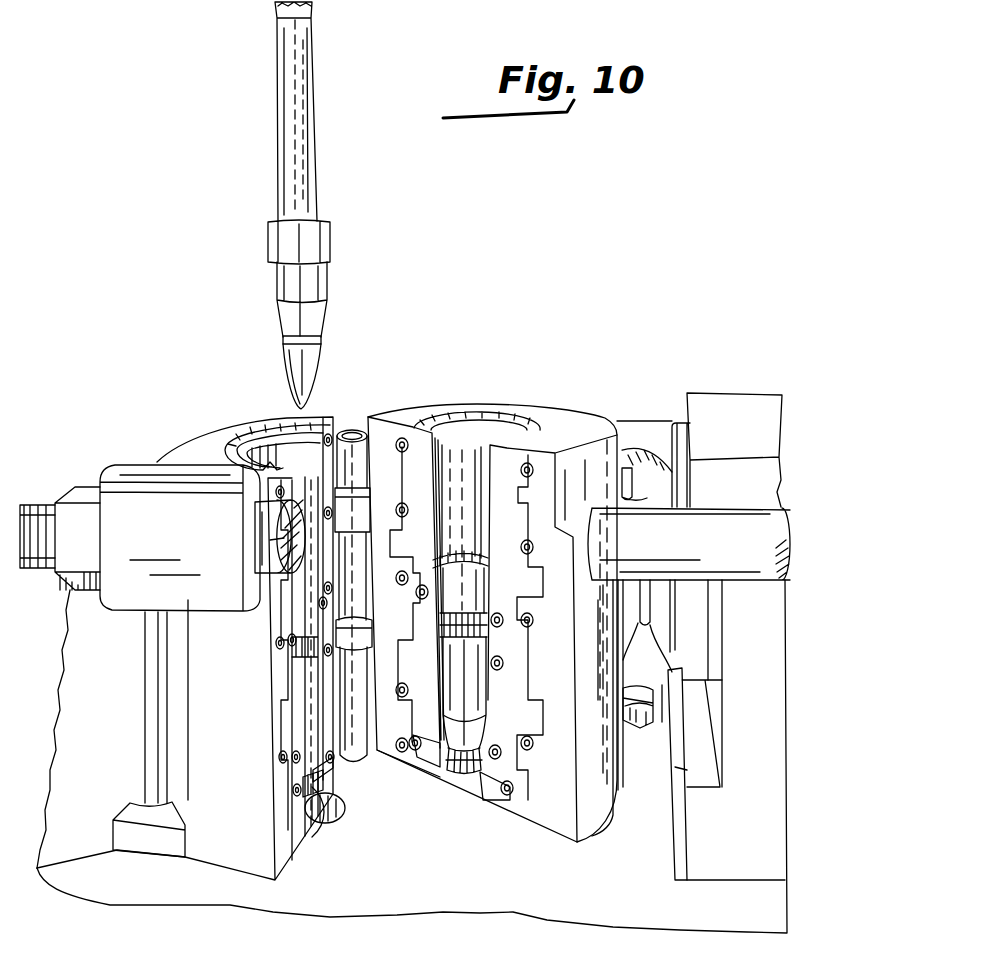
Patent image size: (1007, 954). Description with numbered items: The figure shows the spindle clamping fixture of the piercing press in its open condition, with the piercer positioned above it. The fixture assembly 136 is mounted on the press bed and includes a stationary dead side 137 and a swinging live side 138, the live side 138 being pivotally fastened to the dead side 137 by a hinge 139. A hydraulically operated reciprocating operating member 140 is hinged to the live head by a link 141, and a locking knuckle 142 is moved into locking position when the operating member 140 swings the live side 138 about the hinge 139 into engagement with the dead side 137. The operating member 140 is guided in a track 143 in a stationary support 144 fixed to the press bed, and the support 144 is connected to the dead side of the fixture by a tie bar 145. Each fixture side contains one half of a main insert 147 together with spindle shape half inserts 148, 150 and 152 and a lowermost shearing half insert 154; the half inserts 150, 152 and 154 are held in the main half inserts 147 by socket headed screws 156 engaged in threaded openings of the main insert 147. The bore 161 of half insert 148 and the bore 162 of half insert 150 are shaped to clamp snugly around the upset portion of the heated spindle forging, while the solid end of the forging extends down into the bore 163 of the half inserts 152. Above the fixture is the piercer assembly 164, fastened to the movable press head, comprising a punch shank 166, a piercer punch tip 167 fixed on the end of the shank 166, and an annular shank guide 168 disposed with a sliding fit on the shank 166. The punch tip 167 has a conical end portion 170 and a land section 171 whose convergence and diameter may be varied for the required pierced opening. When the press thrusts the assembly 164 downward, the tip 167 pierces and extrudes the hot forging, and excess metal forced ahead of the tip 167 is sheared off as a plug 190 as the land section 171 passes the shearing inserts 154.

The fixture assembly 136 is at (481, 380).
The dead side 137 is at (200, 432).
The live side 138 is at (578, 421).
The hinge 139 is at (354, 428).
The operating member 140 is at (684, 602).
The link 141 is at (641, 612).
The locking knuckle 142 is at (641, 730).
The track 143 is at (706, 752).
The stationary support 144 is at (752, 405).
The tie bar 145 is at (262, 543).
The main insert 147 is at (287, 727).
The half insert 148 is at (562, 508).
The half insert 150 is at (290, 612).
The half insert 152 is at (297, 733).
The shearing half insert 154 is at (305, 803).
The socket headed screws 156 is at (400, 576).
The bore 161 is at (476, 447).
The bore 162 is at (475, 575).
The bore 163 is at (468, 679).
The piercer assembly 164 is at (335, 143).
The punch shank 166 is at (300, 108).
The piercer punch tip 167 is at (322, 363).
The annular shank guide 168 is at (326, 227).
The conical end portion 170 is at (318, 386).
The land section 171 is at (319, 338).
The plug 190 is at (455, 770).